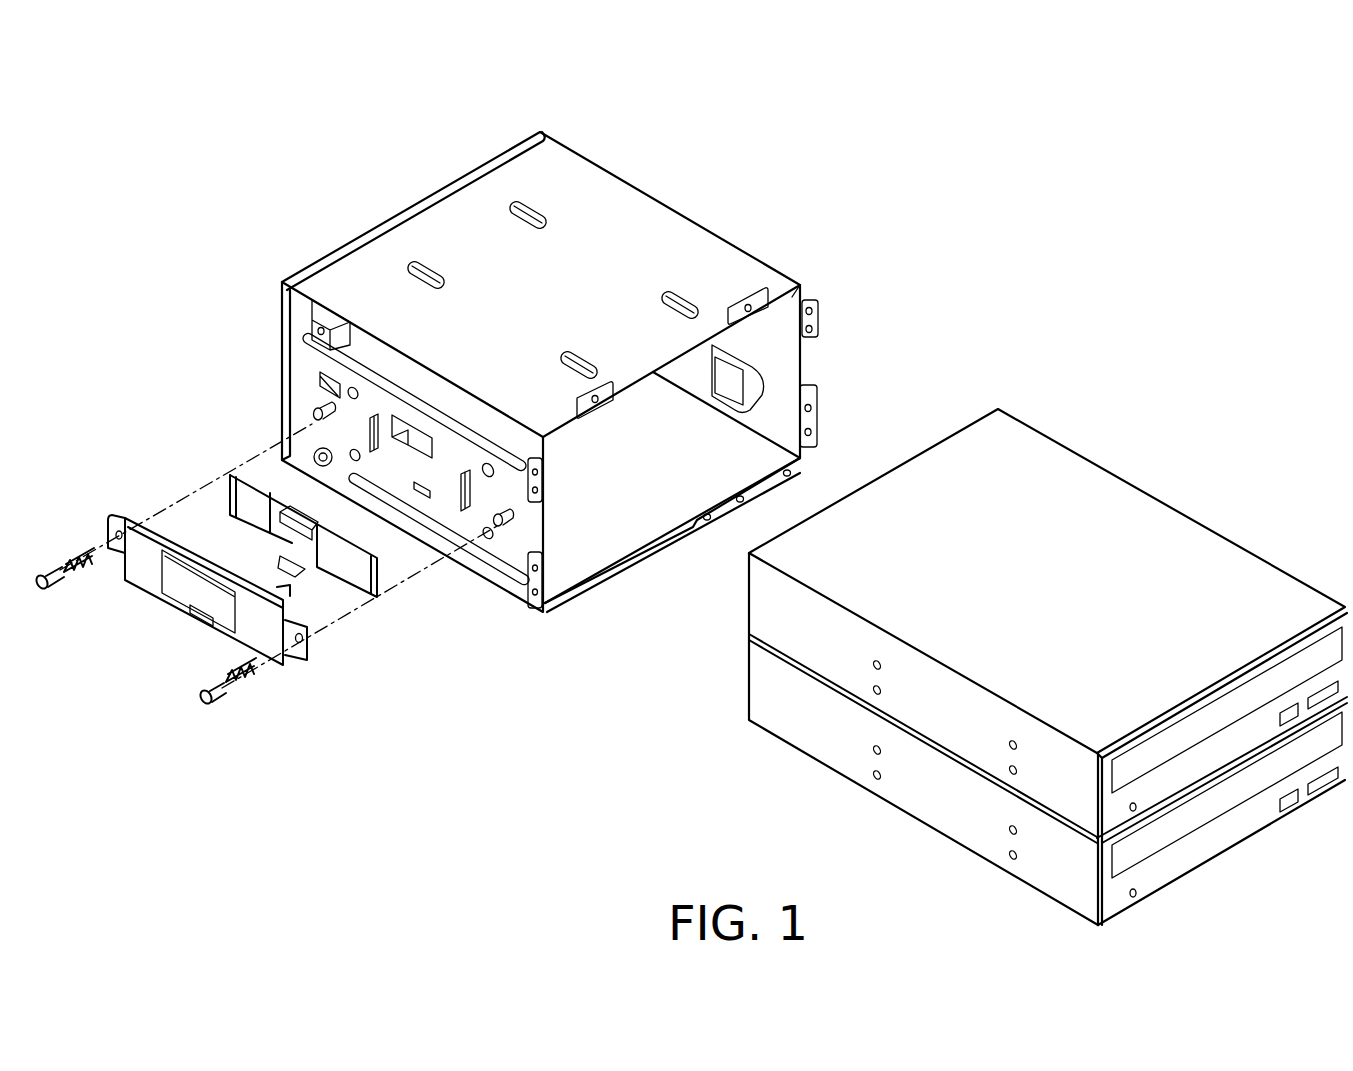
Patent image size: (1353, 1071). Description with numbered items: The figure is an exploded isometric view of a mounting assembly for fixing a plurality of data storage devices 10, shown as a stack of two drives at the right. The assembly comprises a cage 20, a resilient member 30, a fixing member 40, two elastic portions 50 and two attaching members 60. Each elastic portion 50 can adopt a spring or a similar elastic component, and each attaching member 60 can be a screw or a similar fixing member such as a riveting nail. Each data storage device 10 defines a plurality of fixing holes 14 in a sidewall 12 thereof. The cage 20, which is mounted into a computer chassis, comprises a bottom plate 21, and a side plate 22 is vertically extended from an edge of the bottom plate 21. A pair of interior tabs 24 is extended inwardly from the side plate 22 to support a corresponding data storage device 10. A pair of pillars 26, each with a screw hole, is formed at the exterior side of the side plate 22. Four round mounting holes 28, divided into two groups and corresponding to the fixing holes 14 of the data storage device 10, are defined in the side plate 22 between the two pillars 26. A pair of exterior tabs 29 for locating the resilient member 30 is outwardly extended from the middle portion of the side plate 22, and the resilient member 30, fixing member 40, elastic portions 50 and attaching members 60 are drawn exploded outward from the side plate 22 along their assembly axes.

The data storage device 10 is at (1016, 660).
The sidewall 12 is at (768, 606).
The fixing hole 14 is at (877, 751).
The cage 20 is at (527, 388).
The bottom plate 21 is at (765, 445).
The side plate 22 is at (292, 300).
The interior tab 24 is at (320, 392).
The pillar 26 is at (313, 416).
The round mounting hole 28 is at (313, 457).
The exterior tab 29 is at (368, 433).
The resilient member 30 is at (354, 567).
The fixing member 40 is at (142, 571).
The elastic portion 50 is at (250, 677).
The attaching member 60 is at (213, 697).